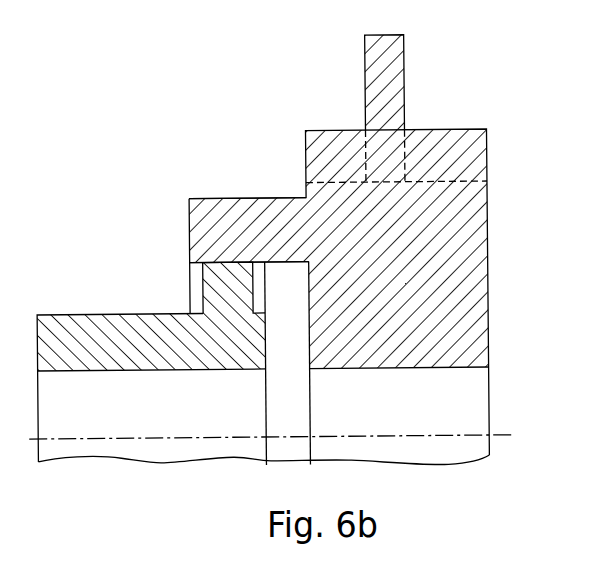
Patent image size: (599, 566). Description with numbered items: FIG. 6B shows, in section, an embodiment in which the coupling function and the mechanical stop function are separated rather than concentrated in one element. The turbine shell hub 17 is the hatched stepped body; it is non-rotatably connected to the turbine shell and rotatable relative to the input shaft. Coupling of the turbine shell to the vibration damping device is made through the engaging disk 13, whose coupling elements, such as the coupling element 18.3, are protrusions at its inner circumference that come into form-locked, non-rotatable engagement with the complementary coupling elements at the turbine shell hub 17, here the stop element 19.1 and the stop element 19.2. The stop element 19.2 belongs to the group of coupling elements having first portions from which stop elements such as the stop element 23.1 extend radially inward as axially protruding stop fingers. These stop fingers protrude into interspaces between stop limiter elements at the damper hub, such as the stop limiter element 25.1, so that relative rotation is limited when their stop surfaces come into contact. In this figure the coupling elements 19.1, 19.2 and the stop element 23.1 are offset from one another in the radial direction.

The engaging disk 13 is at (393, 55).
The turbine shell hub 17 is at (463, 243).
The stop element 19.1 is at (327, 145).
The coupling element 18.3 is at (400, 154).
The stop element 23.1 is at (190, 247).
The stop element 19.2 is at (190, 256).
The stop limiter element 25.1 is at (228, 280).